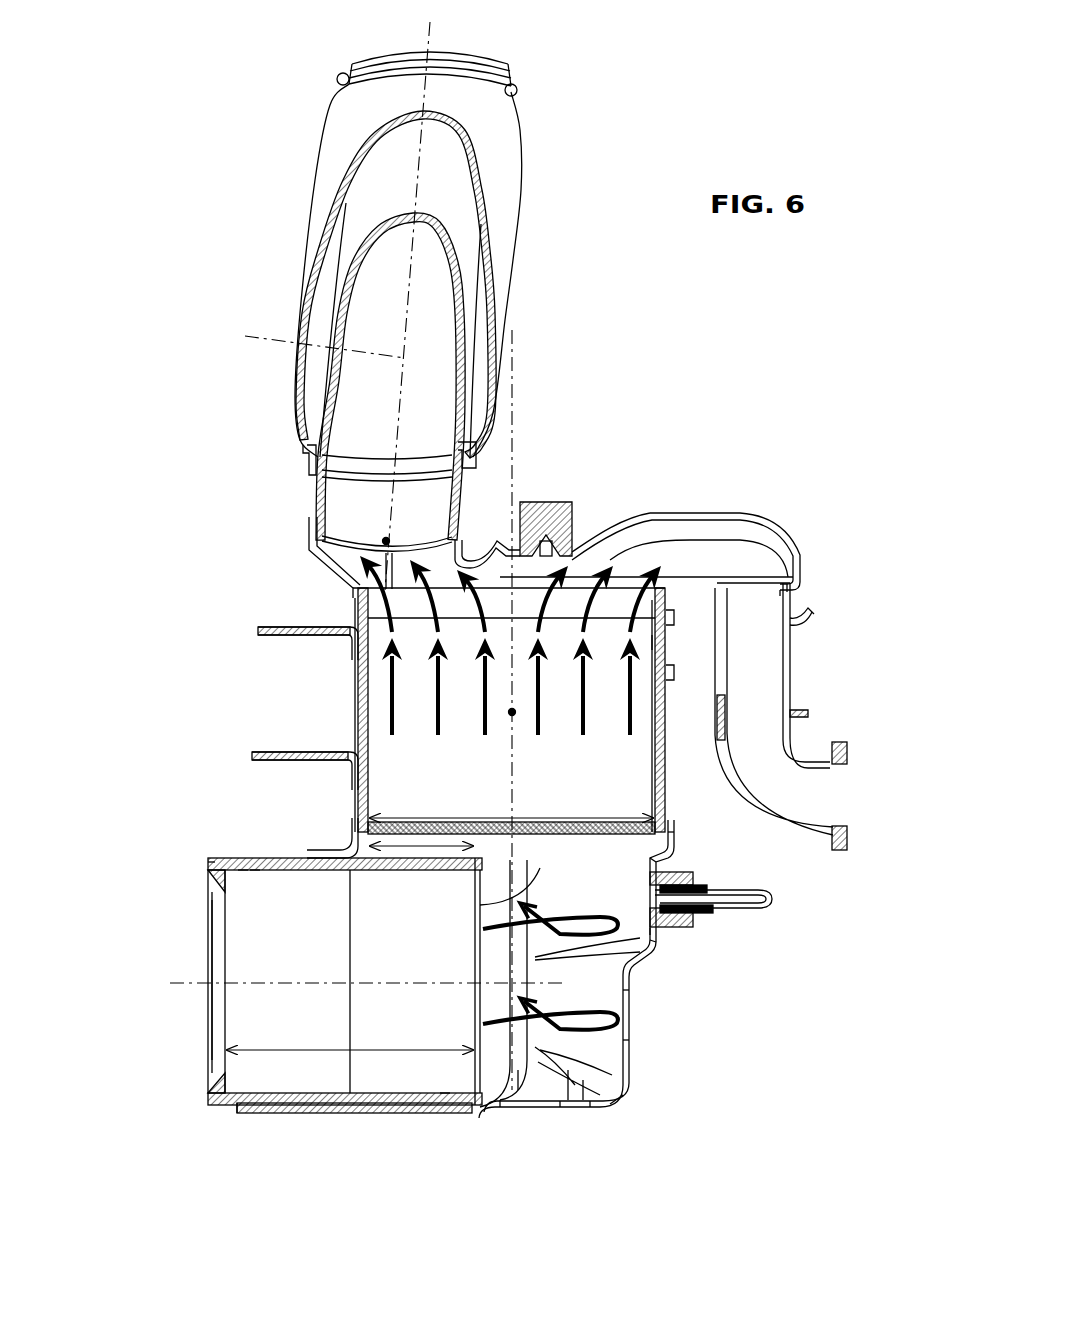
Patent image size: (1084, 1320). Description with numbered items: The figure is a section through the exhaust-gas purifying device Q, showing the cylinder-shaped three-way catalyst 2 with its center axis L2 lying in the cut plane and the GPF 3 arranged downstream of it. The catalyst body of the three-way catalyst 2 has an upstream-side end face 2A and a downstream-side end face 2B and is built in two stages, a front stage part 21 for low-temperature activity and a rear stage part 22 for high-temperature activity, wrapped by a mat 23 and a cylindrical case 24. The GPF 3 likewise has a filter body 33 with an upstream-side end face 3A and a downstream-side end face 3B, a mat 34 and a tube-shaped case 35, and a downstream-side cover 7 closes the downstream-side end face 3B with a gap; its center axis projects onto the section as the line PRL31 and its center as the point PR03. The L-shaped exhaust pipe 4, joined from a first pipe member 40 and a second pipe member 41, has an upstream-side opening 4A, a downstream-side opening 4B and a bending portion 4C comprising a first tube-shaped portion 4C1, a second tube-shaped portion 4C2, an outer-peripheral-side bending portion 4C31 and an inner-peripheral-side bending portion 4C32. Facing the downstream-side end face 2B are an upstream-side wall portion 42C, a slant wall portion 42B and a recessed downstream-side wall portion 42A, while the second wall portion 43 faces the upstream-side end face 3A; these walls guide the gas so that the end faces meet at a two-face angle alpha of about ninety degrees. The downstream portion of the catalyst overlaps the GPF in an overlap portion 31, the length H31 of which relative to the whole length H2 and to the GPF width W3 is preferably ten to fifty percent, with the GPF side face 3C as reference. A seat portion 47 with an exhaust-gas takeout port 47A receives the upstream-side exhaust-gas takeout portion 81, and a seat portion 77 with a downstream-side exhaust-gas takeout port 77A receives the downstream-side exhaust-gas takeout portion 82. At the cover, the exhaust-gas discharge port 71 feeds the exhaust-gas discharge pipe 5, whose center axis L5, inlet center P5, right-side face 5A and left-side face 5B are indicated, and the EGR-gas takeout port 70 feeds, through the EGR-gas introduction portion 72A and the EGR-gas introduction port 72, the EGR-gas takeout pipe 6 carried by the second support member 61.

The three-way catalyst 2 is at (258, 1096).
The upstream-side end face 2A is at (212, 947).
The downstream-side end face 2B is at (525, 1100).
The front stage part 21 is at (252, 862).
The rear stage part 22 is at (446, 1098).
The mat 23 is at (210, 866).
The cylindrical case 24 is at (243, 860).
The GPF 3 is at (668, 743).
The upstream-side end face 3A is at (572, 832).
The downstream-side end face 3B is at (598, 626).
The GPF side face 3C is at (352, 662).
The overlap portion 31 is at (422, 830).
The filter body 33 is at (658, 640).
The mat 34 is at (668, 672).
The tube-shaped case 35 is at (668, 617).
The L-shaped exhaust pipe 4 is at (632, 1022).
The upstream-side opening 4A is at (298, 1110).
The downstream-side opening 4B is at (675, 828).
The bending portion 4C is at (568, 1104).
The first tube-shaped portion 4C1 is at (408, 1112).
The second tube-shaped portion 4C2 is at (632, 992).
The outer-peripheral-side bending portion 4C31 is at (622, 1100).
The inner-peripheral-side bending portion 4C32 is at (345, 850).
The first pipe member 40 is at (481, 1112).
The second pipe member 41 is at (560, 1104).
The downstream-side wall portion 42A is at (676, 853).
The slant wall portion 42B is at (650, 947).
The upstream-side wall portion 42C is at (630, 1060).
The second wall portion 43 is at (580, 1096).
The seat portion 47 is at (655, 930).
The exhaust-gas takeout port 47A is at (650, 892).
The exhaust-gas discharge pipe 5 is at (318, 216).
The right-side face 5A is at (311, 498).
The left-side face 5B is at (459, 540).
The EGR-gas takeout pipe 6 is at (792, 688).
The second support member 61 is at (803, 622).
The downstream-side cover 7 is at (505, 567).
The EGR-gas takeout port 70 is at (615, 534).
The exhaust-gas discharge port 71 is at (438, 556).
The EGR-gas introduction port 72 is at (800, 585).
The EGR-gas introduction portion 72A is at (693, 545).
The seat portion 77 is at (597, 557).
The downstream-side exhaust-gas takeout port 77A is at (540, 563).
The upstream-side exhaust-gas takeout portion 81 is at (696, 921).
The downstream-side exhaust-gas takeout portion 82 is at (548, 503).
The center axis L2 is at (168, 988).
The center axis L5 is at (311, 339).
The center of inlet P5 is at (385, 539).
The projection point PR03 is at (514, 716).
The projection line PRL31 is at (515, 385).
The width of the GPF W3 is at (511, 802).
The whole length H2 is at (350, 1033).
The length of the side face H31 is at (418, 866).
The two-face angle alpha is at (518, 886).
The exhaust-gas purifying device Q is at (772, 1030).